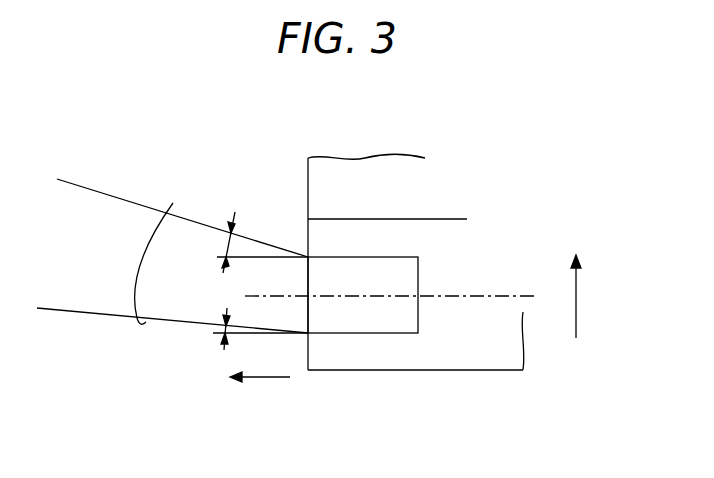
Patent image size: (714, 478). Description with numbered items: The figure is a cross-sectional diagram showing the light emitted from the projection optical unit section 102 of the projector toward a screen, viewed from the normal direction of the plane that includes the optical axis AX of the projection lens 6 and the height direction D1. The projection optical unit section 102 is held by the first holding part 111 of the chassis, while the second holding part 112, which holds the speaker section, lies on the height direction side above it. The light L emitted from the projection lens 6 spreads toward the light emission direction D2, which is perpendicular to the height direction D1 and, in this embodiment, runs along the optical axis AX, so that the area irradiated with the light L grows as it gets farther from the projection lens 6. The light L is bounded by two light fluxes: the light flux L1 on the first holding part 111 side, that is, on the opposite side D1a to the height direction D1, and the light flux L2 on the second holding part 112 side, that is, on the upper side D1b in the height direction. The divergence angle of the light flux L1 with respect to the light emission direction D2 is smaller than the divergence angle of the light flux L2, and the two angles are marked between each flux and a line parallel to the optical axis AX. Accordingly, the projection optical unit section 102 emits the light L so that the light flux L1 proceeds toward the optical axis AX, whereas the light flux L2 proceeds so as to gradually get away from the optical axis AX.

The projection optical unit section 102 is at (438, 258).
The second holding part 112 is at (370, 180).
The first holding part 111 is at (433, 370).
The projection lens 6 is at (363, 333).
The optical axis AX is at (502, 296).
The light L is at (147, 243).
The light flux L1 is at (88, 313).
The light flux L2 is at (104, 193).
The height direction D1 is at (576, 290).
The opposite side to the height direction D1a is at (576, 338).
The upper side in the height direction D1b is at (577, 253).
The light emission direction D2 is at (265, 377).